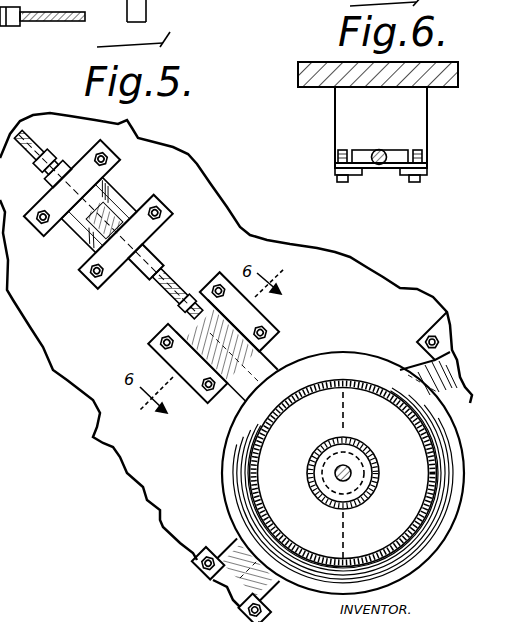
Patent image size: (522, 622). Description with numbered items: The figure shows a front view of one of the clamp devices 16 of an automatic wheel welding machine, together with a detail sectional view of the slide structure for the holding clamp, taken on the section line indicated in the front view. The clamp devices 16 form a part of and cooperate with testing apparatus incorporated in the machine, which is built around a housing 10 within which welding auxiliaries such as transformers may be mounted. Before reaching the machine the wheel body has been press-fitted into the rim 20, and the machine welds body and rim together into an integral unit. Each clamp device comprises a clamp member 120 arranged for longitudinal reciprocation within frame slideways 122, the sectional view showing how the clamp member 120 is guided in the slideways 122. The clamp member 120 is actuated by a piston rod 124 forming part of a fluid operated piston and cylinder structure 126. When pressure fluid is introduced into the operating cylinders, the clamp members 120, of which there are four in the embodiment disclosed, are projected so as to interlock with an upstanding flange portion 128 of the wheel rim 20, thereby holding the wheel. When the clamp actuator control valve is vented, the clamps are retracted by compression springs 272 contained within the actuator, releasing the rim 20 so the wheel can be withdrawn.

In FIG. 5, the housing 10 is at (312, 410).
In FIG. 6, the housing 10 is at (300, 88).
In FIG. 5, the clamp devices 16 is at (187, 268).
In FIG. 5, the rim 20 is at (240, 499).
In FIG. 5, the clamp member 120 is at (278, 368).
In FIG. 6, the clamp member 120 is at (398, 168).
In FIG. 5, the frame slideways 122 is at (247, 315).
In FIG. 6, the frame slideways 122 is at (347, 139).
In FIG. 5, the piston rod 124 is at (167, 303).
In FIG. 6, the piston rod 124 is at (378, 148).
In FIG. 5, the fluid operated piston and cylinder structure 126 is at (62, 238).
In FIG. 5, the upstanding flange portion 128 is at (226, 472).
In FIG. 5, the compression springs 272 is at (130, 200).